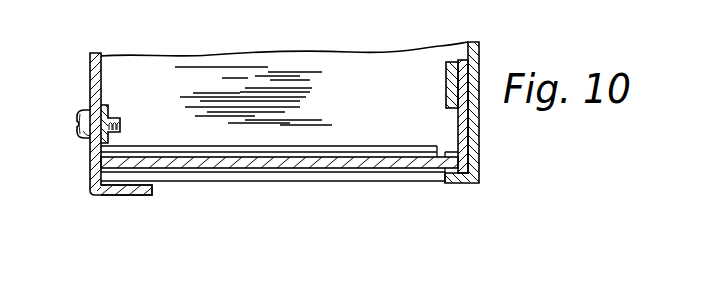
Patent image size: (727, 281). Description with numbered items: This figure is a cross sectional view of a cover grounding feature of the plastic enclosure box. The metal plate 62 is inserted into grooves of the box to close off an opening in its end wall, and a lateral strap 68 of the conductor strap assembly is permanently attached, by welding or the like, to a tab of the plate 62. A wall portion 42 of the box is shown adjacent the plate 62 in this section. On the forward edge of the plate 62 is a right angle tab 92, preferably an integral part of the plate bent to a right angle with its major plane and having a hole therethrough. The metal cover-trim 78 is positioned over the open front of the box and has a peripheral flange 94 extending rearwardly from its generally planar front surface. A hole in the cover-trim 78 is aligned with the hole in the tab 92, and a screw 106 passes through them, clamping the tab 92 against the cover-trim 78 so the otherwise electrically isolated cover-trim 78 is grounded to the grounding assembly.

The inner wall 42 is at (458, 124).
The metal plate 62 is at (323, 163).
The lateral strap 68 is at (447, 73).
The cover-trim 78 is at (90, 184).
The right angle tab 92 is at (104, 112).
The peripheral flange 94 is at (150, 195).
The screw 106 is at (80, 119).